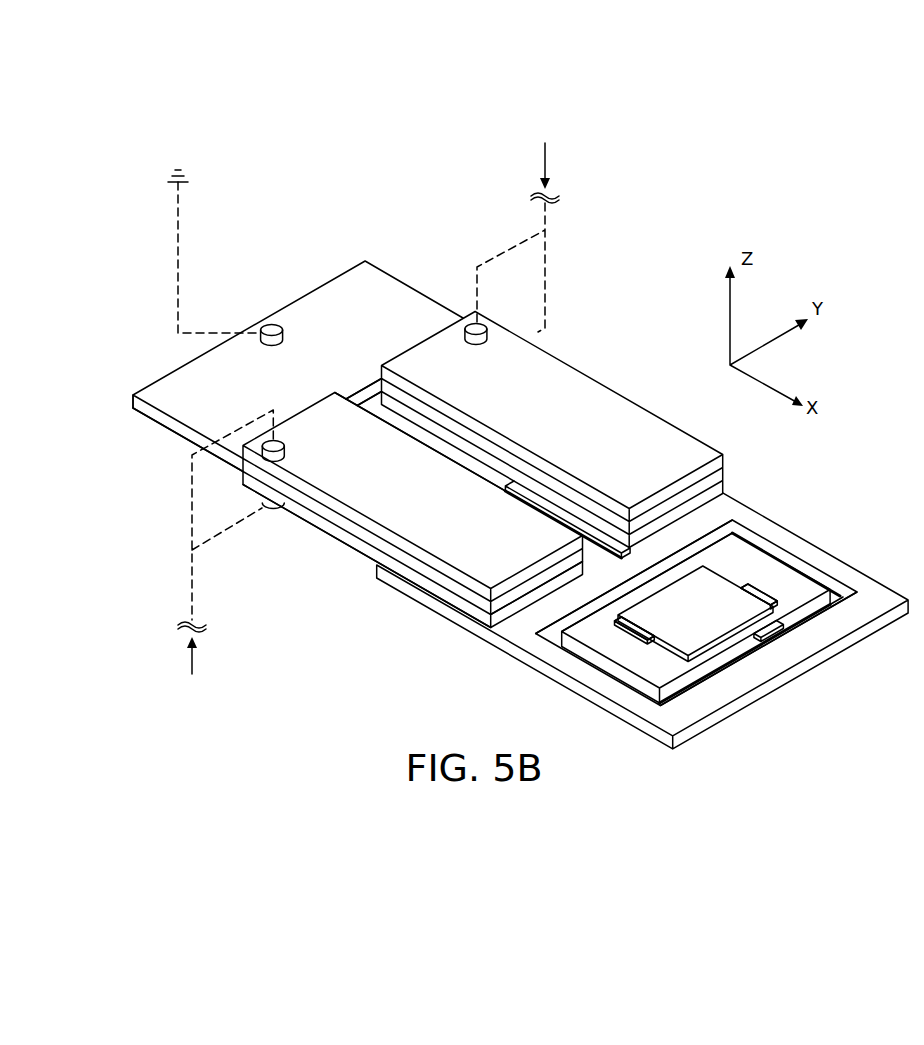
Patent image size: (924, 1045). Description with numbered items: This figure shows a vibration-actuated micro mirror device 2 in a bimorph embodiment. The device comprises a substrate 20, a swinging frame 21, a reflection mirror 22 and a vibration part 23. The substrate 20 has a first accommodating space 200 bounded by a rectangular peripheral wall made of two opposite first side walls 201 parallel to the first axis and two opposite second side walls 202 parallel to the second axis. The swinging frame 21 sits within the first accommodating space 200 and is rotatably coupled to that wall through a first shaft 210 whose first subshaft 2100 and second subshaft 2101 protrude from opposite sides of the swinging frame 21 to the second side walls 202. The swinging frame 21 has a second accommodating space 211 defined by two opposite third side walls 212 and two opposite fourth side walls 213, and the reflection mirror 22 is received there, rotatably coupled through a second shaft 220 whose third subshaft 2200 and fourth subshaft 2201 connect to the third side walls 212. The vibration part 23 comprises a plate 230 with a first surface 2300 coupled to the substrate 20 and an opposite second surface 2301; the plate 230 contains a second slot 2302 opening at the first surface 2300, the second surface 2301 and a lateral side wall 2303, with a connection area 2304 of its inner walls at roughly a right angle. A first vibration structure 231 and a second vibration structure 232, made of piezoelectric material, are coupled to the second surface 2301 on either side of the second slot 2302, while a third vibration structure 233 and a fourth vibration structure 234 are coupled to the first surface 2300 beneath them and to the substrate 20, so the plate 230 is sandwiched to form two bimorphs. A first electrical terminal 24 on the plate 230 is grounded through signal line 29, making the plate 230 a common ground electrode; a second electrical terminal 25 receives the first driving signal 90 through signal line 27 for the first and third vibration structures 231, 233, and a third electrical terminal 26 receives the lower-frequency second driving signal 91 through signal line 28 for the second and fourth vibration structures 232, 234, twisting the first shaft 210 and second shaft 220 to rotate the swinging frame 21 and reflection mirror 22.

The vibration-actuated micro mirror device 2 is at (328, 197).
The substrate 20 is at (820, 535).
The first accommodating space 200 is at (840, 597).
The first side wall 201 is at (830, 580).
The second side wall 202 is at (612, 605).
The swinging frame 21 is at (648, 671).
The second accommodating space 211 is at (766, 630).
The third side wall 212 is at (752, 598).
The fourth side wall 213 is at (627, 622).
The reflection mirror 22 is at (687, 605).
The first shaft 210 is at (582, 767).
The first subshaft 2100 is at (634, 582).
The second subshaft 2101 is at (752, 645).
The second shaft 220 is at (772, 420).
The third subshaft 2200 is at (653, 637).
The fourth subshaft 2201 is at (740, 590).
The vibration part 23 is at (410, 266).
The plate 230 is at (307, 305).
The first surface 2300 is at (183, 440).
The second surface 2301 is at (163, 403).
The second slot 2302 is at (392, 420).
The lateral side wall 2303 is at (547, 588).
The connection area 2304 is at (345, 397).
The first vibration structure 231 is at (545, 347).
The second vibration structure 232 is at (326, 482).
The third vibration structure 233 is at (535, 483).
The fourth vibration structure 234 is at (345, 543).
The first electrical terminal 24 is at (260, 327).
The second electrical terminal 25 is at (480, 324).
The third electrical terminal 26 is at (258, 448).
The signal line 27 is at (548, 258).
The signal line 28 is at (190, 577).
The signal line 29 is at (178, 228).
The first driving signal 90 is at (545, 162).
The second driving signal 91 is at (192, 661).